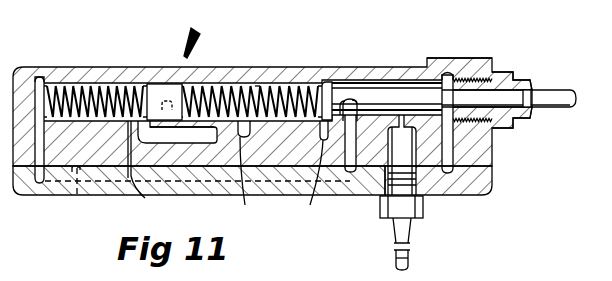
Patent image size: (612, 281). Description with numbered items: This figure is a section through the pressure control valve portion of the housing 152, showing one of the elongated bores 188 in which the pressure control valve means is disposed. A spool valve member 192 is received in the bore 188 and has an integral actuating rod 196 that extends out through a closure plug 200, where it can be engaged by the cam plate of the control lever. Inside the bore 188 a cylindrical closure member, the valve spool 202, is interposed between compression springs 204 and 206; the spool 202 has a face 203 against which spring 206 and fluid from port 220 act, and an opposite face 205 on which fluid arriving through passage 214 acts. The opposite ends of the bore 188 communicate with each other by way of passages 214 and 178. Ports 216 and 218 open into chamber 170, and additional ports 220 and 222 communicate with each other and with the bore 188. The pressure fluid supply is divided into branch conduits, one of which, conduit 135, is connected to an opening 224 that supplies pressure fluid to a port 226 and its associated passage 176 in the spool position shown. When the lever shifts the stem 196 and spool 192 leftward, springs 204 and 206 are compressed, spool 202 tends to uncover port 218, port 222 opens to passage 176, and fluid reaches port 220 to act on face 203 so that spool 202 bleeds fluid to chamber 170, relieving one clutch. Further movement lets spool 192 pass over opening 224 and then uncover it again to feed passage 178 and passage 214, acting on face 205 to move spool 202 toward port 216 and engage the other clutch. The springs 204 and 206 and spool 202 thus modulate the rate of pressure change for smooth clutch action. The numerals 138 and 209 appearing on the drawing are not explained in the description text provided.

The branch conduit 135 is at (392, 253).
The direction arrow 138 is at (181, 37).
The housing 152 is at (356, 84).
The chamber 170 is at (201, 160).
The passage 176 is at (349, 173).
The passage 178 is at (449, 152).
The elongated bore 188 is at (320, 83).
The spool valve member 192 is at (413, 97).
The actuating rod 196 is at (548, 97).
The closure plug 200 is at (511, 130).
The valve spool 202 is at (160, 88).
The face 203 is at (198, 85).
The compression spring 204 is at (77, 85).
The face 205 is at (128, 122).
The compression spring 206 is at (257, 84).
The sheet reference 209 is at (558, 267).
The passage 214 is at (77, 205).
The port 216 is at (145, 206).
The port 218 is at (162, 140).
The port 220 is at (236, 208).
The port 222 is at (300, 208).
The opening 224 is at (430, 200).
The port 226 is at (362, 106).